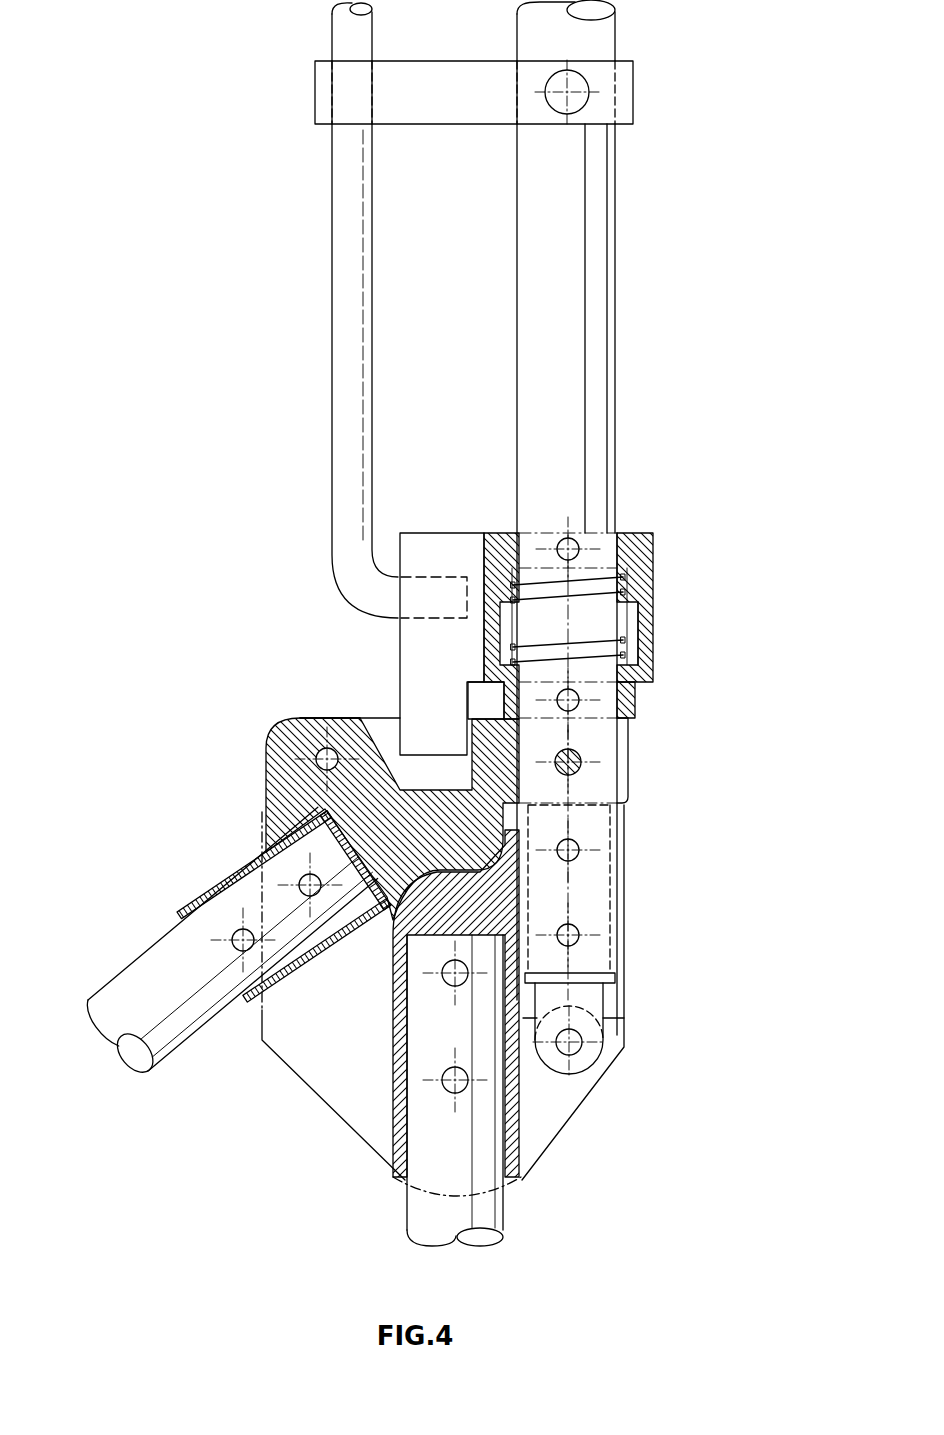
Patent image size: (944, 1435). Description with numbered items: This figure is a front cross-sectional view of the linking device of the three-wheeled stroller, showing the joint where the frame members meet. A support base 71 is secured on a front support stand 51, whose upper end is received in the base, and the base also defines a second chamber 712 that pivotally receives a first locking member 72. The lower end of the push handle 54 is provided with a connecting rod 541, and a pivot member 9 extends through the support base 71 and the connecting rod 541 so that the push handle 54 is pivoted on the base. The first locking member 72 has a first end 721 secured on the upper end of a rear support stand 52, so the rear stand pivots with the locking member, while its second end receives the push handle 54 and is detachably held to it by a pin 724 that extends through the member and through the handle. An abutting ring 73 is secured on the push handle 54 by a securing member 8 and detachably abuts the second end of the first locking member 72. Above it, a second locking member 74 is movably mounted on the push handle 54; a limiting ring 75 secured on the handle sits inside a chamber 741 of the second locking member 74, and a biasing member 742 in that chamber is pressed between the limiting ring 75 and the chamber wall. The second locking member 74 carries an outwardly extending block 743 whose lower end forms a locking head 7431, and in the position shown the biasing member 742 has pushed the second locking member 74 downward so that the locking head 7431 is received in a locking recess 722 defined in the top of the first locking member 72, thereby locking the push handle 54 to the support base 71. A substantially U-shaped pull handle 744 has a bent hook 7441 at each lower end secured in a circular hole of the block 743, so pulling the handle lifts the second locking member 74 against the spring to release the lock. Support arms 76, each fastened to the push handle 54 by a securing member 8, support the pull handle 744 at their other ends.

The securing member 8 is at (585, 86).
The pivot member 9 is at (577, 1048).
The front support stand 51 is at (425, 1227).
The rear support stand 52 is at (133, 977).
The push handle 54 is at (614, 228).
The support base 71 is at (456, 1003).
The first locking member 72 is at (266, 765).
The abutting ring 73 is at (636, 692).
The second locking member 74 is at (654, 650).
The limiting ring 75 is at (512, 533).
The support arm 76 is at (434, 112).
The connecting rod 541 is at (612, 887).
The second chamber 712 is at (315, 1071).
The first end 721 is at (238, 882).
The locking recess 722 is at (377, 718).
The pin 724 is at (584, 766).
The chamber 741 is at (641, 620).
The biasing member 742 is at (654, 576).
The block 743 is at (430, 540).
The pull handle 744 is at (342, 290).
The locking head 7431 is at (427, 722).
The bent hook 7441 is at (442, 602).